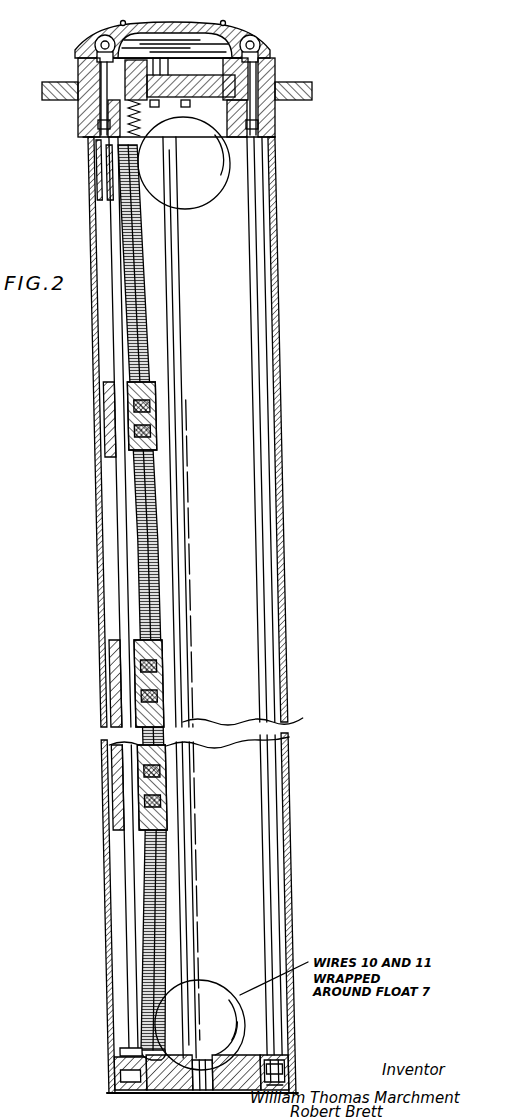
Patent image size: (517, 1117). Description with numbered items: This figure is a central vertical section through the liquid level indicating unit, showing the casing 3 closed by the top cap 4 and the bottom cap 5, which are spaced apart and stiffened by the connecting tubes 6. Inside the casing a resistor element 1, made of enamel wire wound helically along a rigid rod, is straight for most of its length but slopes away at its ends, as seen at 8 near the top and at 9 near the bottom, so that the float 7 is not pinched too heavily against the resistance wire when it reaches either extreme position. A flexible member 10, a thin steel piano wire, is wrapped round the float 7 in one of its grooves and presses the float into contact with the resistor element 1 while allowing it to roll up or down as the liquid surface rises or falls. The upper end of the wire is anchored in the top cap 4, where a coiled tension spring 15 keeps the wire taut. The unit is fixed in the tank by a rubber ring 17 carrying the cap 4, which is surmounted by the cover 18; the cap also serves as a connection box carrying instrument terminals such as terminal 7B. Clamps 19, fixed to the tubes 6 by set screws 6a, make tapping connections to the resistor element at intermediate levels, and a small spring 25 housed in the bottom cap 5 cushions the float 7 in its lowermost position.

The resistor element 1 is at (142, 505).
The casing 3 is at (282, 692).
The top cap 4 is at (83, 122).
The bottom cap 5 is at (108, 1062).
The connecting tube 6 is at (260, 428).
The set screw 6a is at (162, 685).
The float 7 is at (218, 195).
The terminal 7B is at (82, 62).
The sloped top end of resistor element 8 is at (117, 203).
The sloped bottom end of resistor element 9 is at (140, 992).
The flexible member 10 is at (138, 238).
The coiled tension spring 15 is at (90, 145).
The rubber ring 17 is at (42, 87).
The cover 18 is at (262, 52).
The clamp 19 is at (102, 427).
The spring 25 is at (285, 1055).